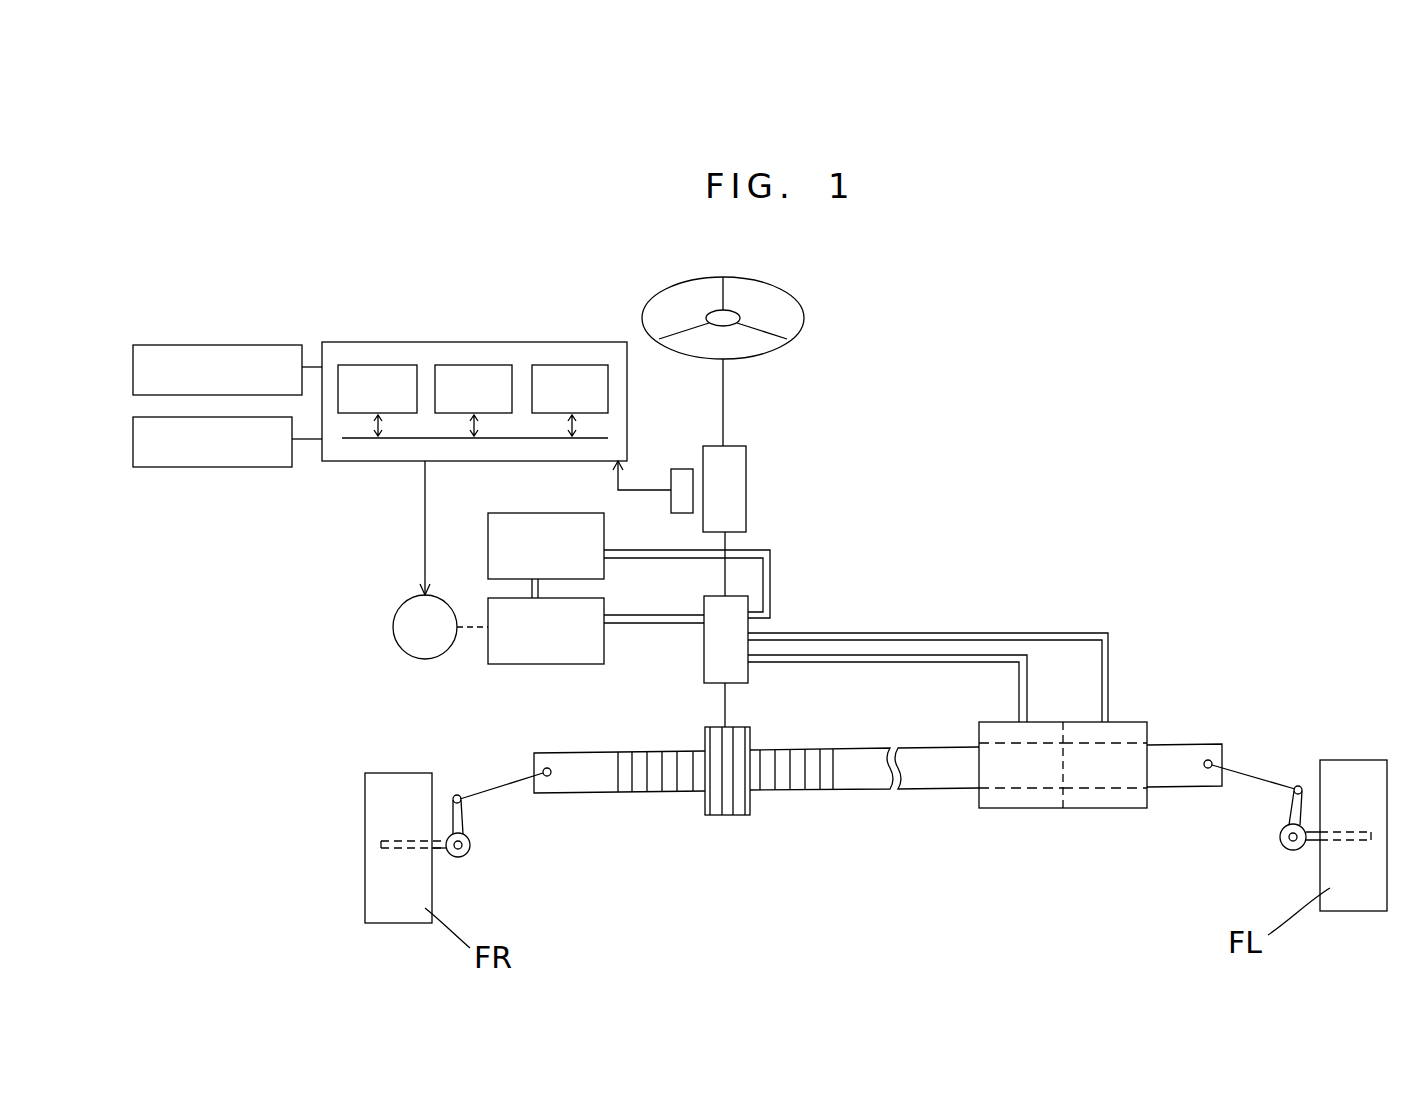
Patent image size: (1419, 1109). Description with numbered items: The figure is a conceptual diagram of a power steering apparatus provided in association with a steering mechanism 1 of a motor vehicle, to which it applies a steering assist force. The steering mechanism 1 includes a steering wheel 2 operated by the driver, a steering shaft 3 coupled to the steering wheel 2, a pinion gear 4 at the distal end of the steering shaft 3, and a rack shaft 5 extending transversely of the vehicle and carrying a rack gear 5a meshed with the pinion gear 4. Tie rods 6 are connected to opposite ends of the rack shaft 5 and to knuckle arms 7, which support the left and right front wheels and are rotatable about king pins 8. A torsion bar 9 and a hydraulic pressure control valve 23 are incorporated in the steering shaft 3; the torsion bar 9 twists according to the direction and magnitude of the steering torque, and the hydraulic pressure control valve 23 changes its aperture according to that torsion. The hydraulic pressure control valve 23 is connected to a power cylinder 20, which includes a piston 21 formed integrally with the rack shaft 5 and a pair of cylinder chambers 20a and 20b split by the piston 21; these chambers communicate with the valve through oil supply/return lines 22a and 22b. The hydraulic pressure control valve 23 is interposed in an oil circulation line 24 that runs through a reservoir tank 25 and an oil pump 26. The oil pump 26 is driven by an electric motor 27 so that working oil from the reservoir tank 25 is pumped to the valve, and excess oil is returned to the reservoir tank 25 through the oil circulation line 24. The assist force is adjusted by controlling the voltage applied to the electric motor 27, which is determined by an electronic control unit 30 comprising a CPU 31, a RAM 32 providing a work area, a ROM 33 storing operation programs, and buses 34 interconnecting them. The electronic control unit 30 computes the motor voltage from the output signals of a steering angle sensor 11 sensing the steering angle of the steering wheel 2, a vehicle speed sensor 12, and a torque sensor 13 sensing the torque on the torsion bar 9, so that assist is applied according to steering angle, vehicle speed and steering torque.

The steering mechanism 1 is at (832, 462).
The steering wheel 2 is at (765, 281).
The steering shaft 3 is at (727, 425).
The pinion gear 4 is at (722, 815).
The rack shaft 5 is at (878, 805).
The rack gear 5a is at (672, 782).
The tie rods 6 is at (495, 790).
The knuckle arms 7 is at (470, 848).
The king pins 8 is at (466, 857).
The torsion bar 9 is at (738, 498).
The steering angle sensor 11 is at (196, 345).
The vehicle speed sensor 12 is at (196, 467).
The torque sensor 13 is at (681, 473).
The power cylinder 20 is at (1101, 794).
The cylinder chamber 20a is at (1030, 798).
The cylinder chamber 20b is at (1118, 798).
The piston 21 is at (1065, 792).
The oil supply/return line 22a is at (945, 664).
The oil supply/return line 22b is at (970, 633).
The hydraulic pressure control valve 23 is at (710, 650).
The oil circulation line 24 is at (770, 585).
The reservoir tank 25 is at (518, 517).
The oil pump 26 is at (528, 665).
The electric motor 27 is at (393, 637).
The electronic control unit 30 is at (487, 392).
The CPU 31 is at (378, 367).
The RAM 32 is at (565, 367).
The ROM 33 is at (488, 367).
The buses 34 is at (407, 440).